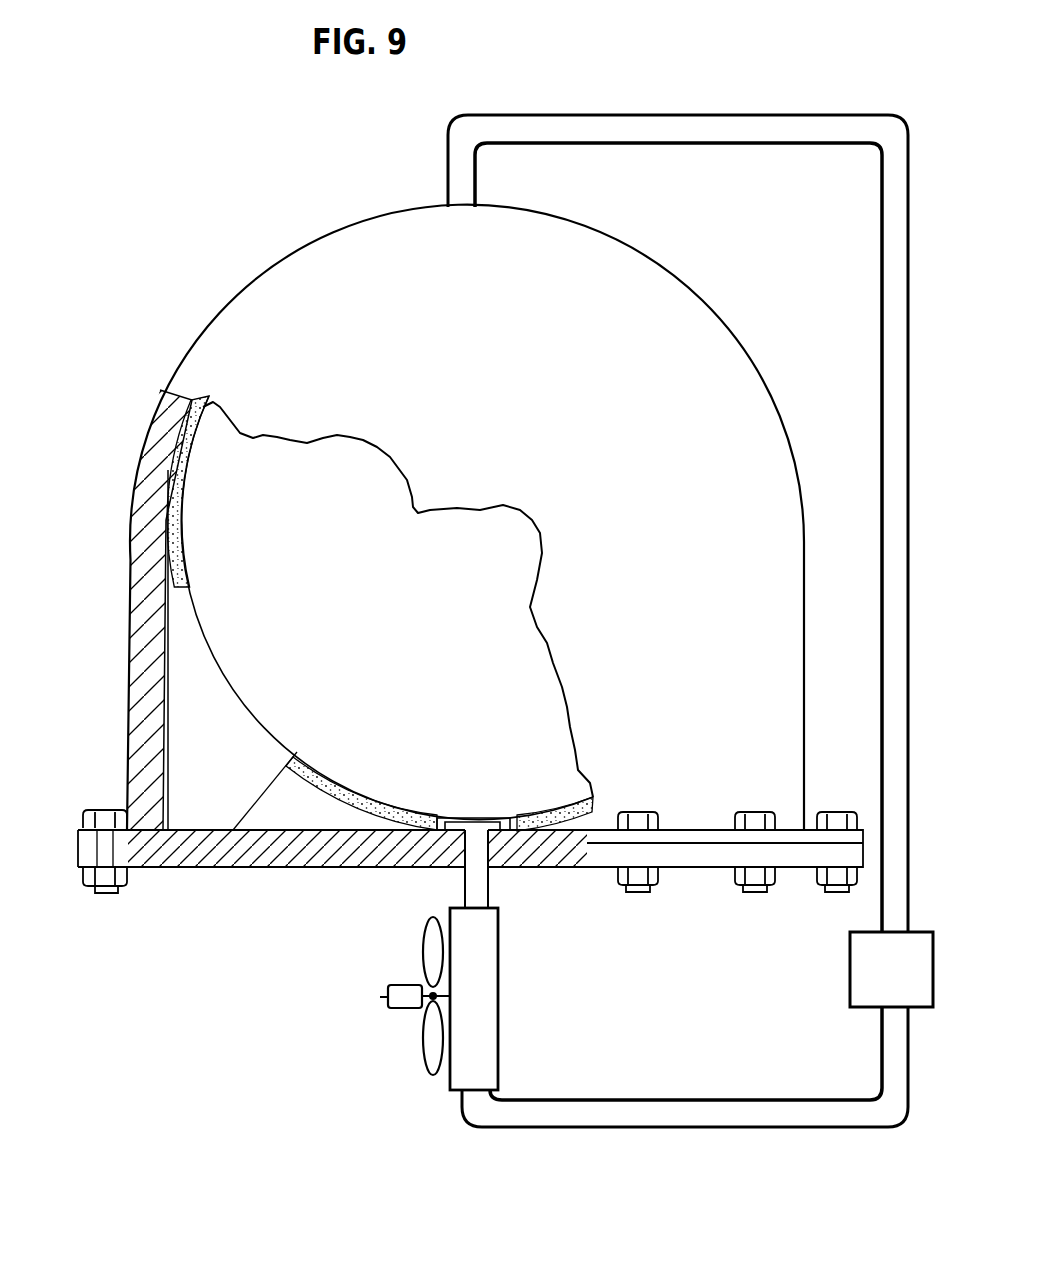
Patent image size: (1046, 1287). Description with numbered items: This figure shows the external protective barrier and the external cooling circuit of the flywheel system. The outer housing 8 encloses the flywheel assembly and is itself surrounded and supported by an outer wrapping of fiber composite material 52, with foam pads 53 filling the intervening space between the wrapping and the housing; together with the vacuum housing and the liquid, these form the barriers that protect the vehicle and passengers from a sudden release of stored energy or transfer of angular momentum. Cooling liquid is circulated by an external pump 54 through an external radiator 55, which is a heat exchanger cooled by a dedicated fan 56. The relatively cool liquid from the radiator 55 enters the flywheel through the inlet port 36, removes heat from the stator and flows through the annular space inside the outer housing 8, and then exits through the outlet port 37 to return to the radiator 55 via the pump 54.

The outer housing 8 is at (220, 631).
The inlet port 36 is at (488, 882).
The outlet port 37 is at (463, 177).
The outer wrapping of fiber composite material 52 is at (703, 307).
The foam pads 53 is at (172, 466).
The external pump 54 is at (872, 970).
The external radiator 55 is at (486, 997).
The fan 56 is at (388, 997).